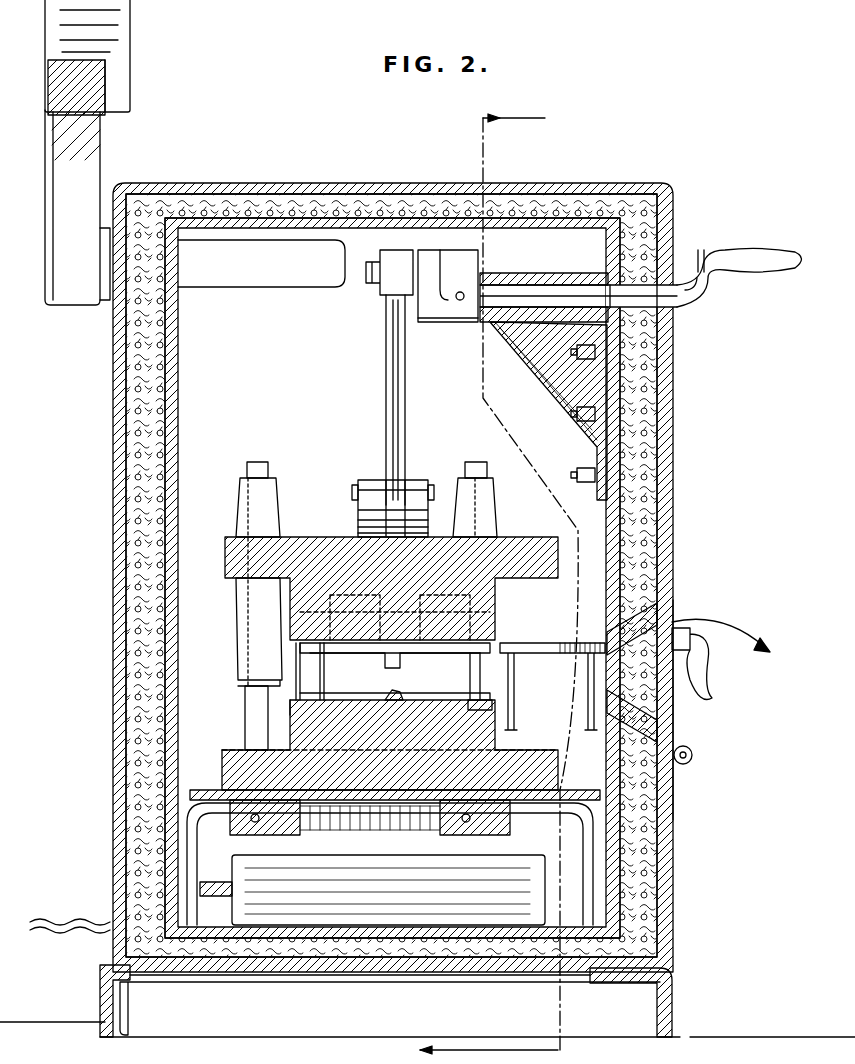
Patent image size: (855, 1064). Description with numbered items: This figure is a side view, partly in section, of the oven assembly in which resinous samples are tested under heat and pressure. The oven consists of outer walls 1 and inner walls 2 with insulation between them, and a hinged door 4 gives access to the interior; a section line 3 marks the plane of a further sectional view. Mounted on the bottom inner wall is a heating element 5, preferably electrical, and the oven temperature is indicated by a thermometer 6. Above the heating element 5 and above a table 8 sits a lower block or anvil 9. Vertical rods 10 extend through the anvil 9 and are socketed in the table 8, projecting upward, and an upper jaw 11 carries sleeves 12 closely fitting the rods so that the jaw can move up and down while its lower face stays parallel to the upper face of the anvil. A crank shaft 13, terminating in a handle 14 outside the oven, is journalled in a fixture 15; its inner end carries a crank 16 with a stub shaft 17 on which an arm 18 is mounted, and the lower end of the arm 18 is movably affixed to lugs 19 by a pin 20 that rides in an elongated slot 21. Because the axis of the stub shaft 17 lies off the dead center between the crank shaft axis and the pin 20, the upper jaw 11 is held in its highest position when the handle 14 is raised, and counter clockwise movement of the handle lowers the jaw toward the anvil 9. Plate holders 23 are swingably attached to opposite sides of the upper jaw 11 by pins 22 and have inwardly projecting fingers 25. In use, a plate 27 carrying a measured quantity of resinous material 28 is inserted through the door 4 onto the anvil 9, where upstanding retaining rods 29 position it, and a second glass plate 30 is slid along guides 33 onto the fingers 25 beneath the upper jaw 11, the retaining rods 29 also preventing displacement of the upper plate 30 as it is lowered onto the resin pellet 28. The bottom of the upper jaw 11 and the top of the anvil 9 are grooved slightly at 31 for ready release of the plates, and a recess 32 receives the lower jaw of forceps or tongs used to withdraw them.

The outer walls 1 is at (113, 443).
The inner walls 2 is at (178, 450).
The section line 3 is at (488, 586).
The hinged door 4 is at (672, 604).
The heating element 5 is at (372, 890).
The thermometer 6 is at (258, 287).
The table 8 is at (193, 790).
The lower block or anvil 9 is at (495, 740).
The vertical rods 10 is at (245, 712).
The upper jaw 11 is at (225, 557).
The sleeves 12 is at (236, 630).
The crank shaft 13 is at (562, 305).
The handle 14 is at (712, 283).
The fixture 15 is at (540, 362).
The crank 16 is at (447, 262).
The stub shaft 17 is at (378, 280).
The arm 18 is at (385, 380).
The lugs 19 is at (362, 478).
The pin 20 is at (352, 494).
The elongated slot 21 is at (372, 520).
The pins 22 is at (455, 600).
The plate holders 23 is at (470, 618).
The inwardly projecting fingers 25 is at (455, 652).
The plate 27 is at (395, 691).
The resinous material 28 is at (412, 680).
The retaining rods 29 is at (316, 672).
The second glass plate 30 is at (395, 667).
The grooves 31 is at (300, 705).
The recess 32 is at (492, 705).
The guides 33 is at (562, 645).